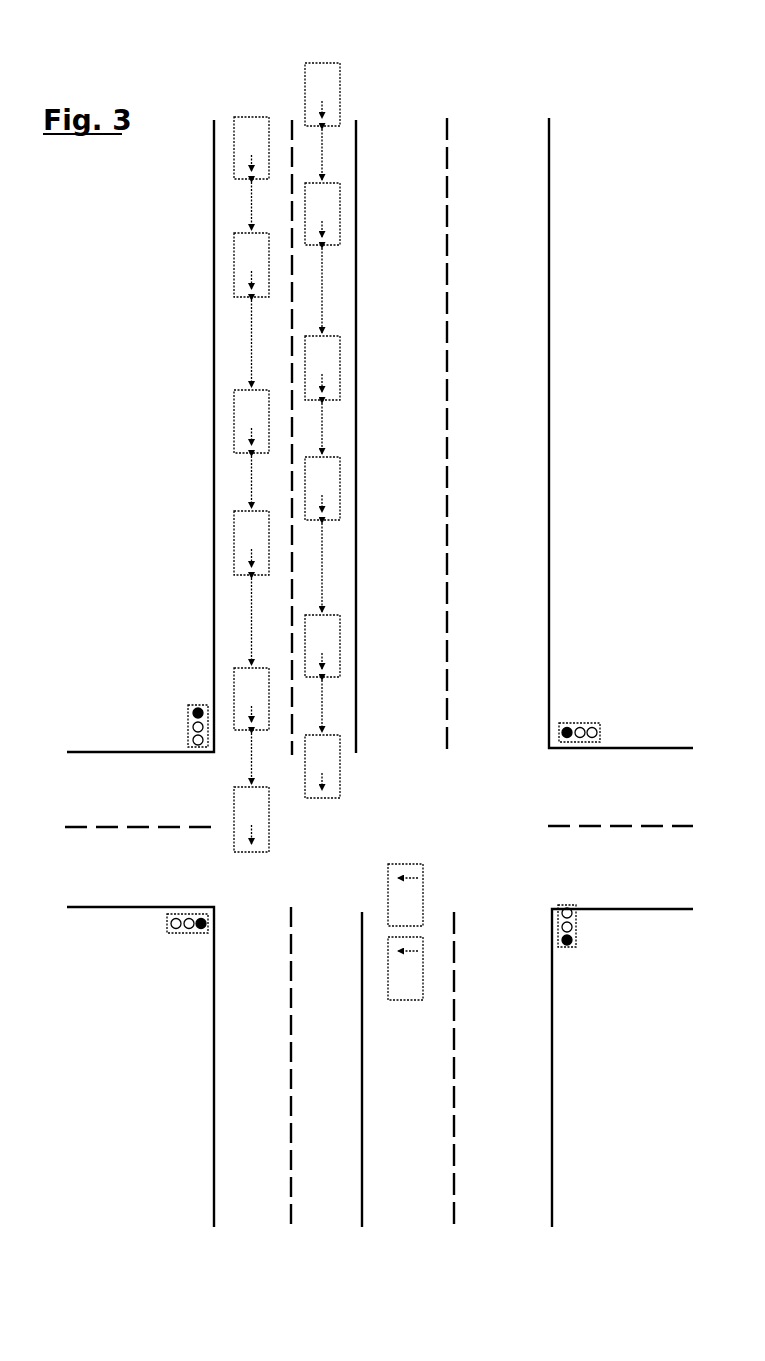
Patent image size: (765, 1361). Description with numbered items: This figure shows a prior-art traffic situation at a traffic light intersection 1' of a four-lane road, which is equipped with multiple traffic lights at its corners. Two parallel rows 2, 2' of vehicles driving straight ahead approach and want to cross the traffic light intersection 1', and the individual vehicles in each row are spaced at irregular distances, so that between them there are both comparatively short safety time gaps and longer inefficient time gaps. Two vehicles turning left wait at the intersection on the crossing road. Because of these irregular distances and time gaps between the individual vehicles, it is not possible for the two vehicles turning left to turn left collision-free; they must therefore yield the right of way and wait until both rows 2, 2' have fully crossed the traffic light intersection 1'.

The traffic light intersection 1' is at (621, 433).
The row of vehicles driving straight ahead 2 is at (233, 454).
The row of vehicles driving straight ahead 2' is at (356, 408).